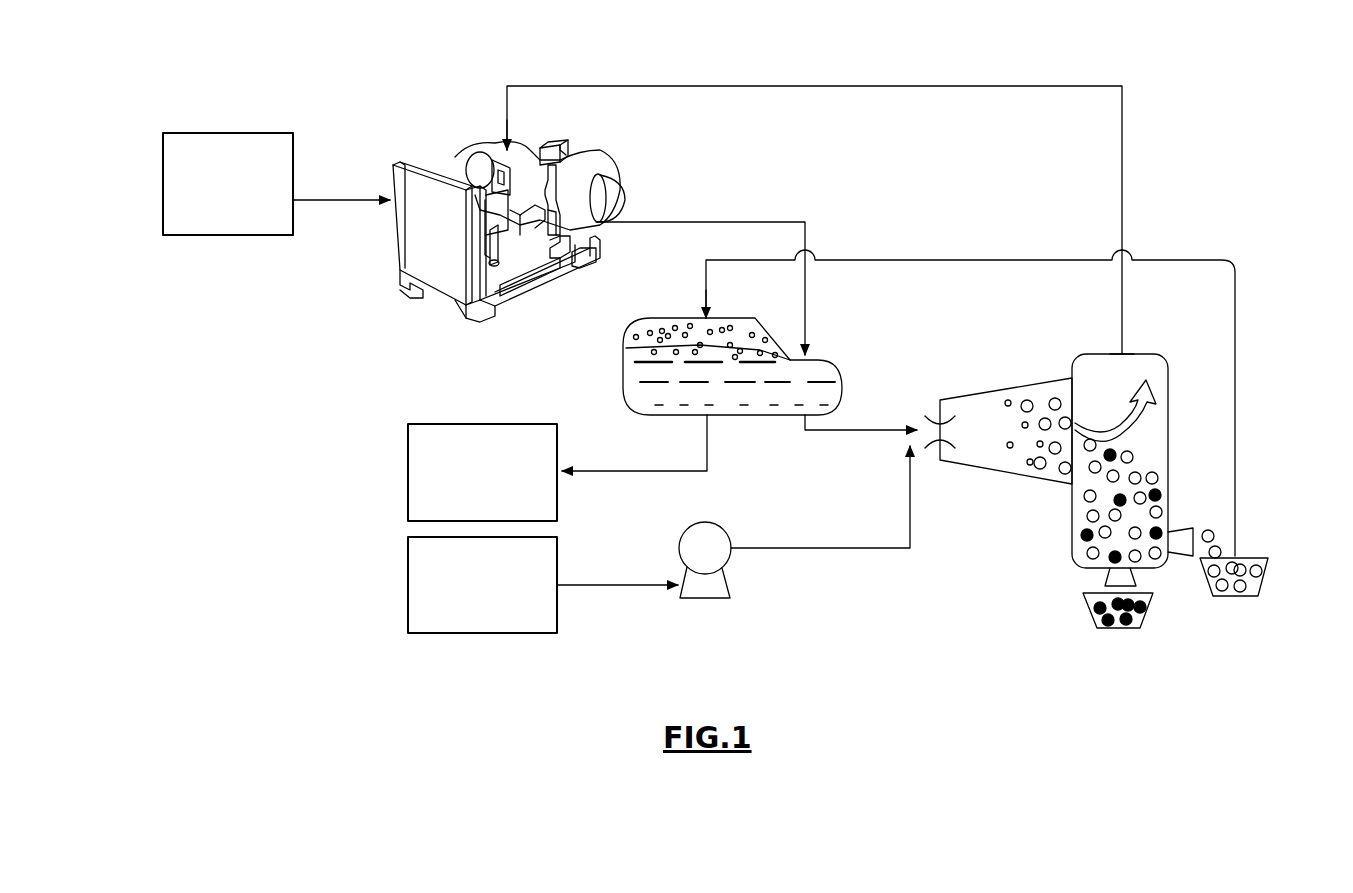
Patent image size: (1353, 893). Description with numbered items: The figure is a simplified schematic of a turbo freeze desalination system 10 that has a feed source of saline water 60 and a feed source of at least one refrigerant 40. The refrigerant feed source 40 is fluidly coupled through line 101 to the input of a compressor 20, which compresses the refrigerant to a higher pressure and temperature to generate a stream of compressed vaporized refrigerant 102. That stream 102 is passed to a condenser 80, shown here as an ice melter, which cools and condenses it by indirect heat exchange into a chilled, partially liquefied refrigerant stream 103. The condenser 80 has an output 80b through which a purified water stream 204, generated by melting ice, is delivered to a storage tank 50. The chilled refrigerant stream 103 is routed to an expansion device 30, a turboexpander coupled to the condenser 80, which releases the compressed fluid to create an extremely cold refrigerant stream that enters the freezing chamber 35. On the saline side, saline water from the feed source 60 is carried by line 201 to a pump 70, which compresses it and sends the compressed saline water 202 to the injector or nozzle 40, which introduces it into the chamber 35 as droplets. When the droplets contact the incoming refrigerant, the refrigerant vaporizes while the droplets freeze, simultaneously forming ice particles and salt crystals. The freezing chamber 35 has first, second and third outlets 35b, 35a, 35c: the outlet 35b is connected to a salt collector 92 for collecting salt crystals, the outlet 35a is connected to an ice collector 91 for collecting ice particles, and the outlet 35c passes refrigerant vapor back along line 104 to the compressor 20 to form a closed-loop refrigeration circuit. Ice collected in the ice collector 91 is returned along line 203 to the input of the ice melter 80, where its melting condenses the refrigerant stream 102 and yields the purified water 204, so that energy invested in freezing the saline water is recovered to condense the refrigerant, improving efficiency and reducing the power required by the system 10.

The turbo freeze desalination system 10 is at (972, 713).
The compressor 20 is at (400, 165).
The expansion device 30 is at (1012, 390).
The freezing chamber 35 is at (1155, 354).
The second outlet of freezing chamber 35a is at (1178, 527).
The first outlet of freezing chamber 35b is at (1108, 574).
The third outlet of freezing chamber 35c is at (1118, 354).
The refrigerant feed source / injector 40 is at (945, 426).
The storage tank 50 is at (482, 472).
The feed source of saline water 60 is at (482, 585).
The pump 70 is at (697, 600).
The condenser / ice melter 80 is at (626, 340).
The output of condenser 80b is at (709, 418).
The ice collector / ice separator 91 is at (1230, 598).
The salt collector 92 is at (1112, 630).
The refrigerant feed coupling 101 is at (330, 200).
The compressed vaporized refrigerant stream 102 is at (682, 222).
The chilled partially liquefied refrigerant stream 103 is at (861, 449).
The refrigerant vapor return line 104 is at (726, 86).
The saline water feed line 201 is at (600, 585).
The compressed saline water stream 202 is at (810, 548).
The ice transfer line 203 is at (1236, 420).
The purified water stream 204 is at (600, 471).